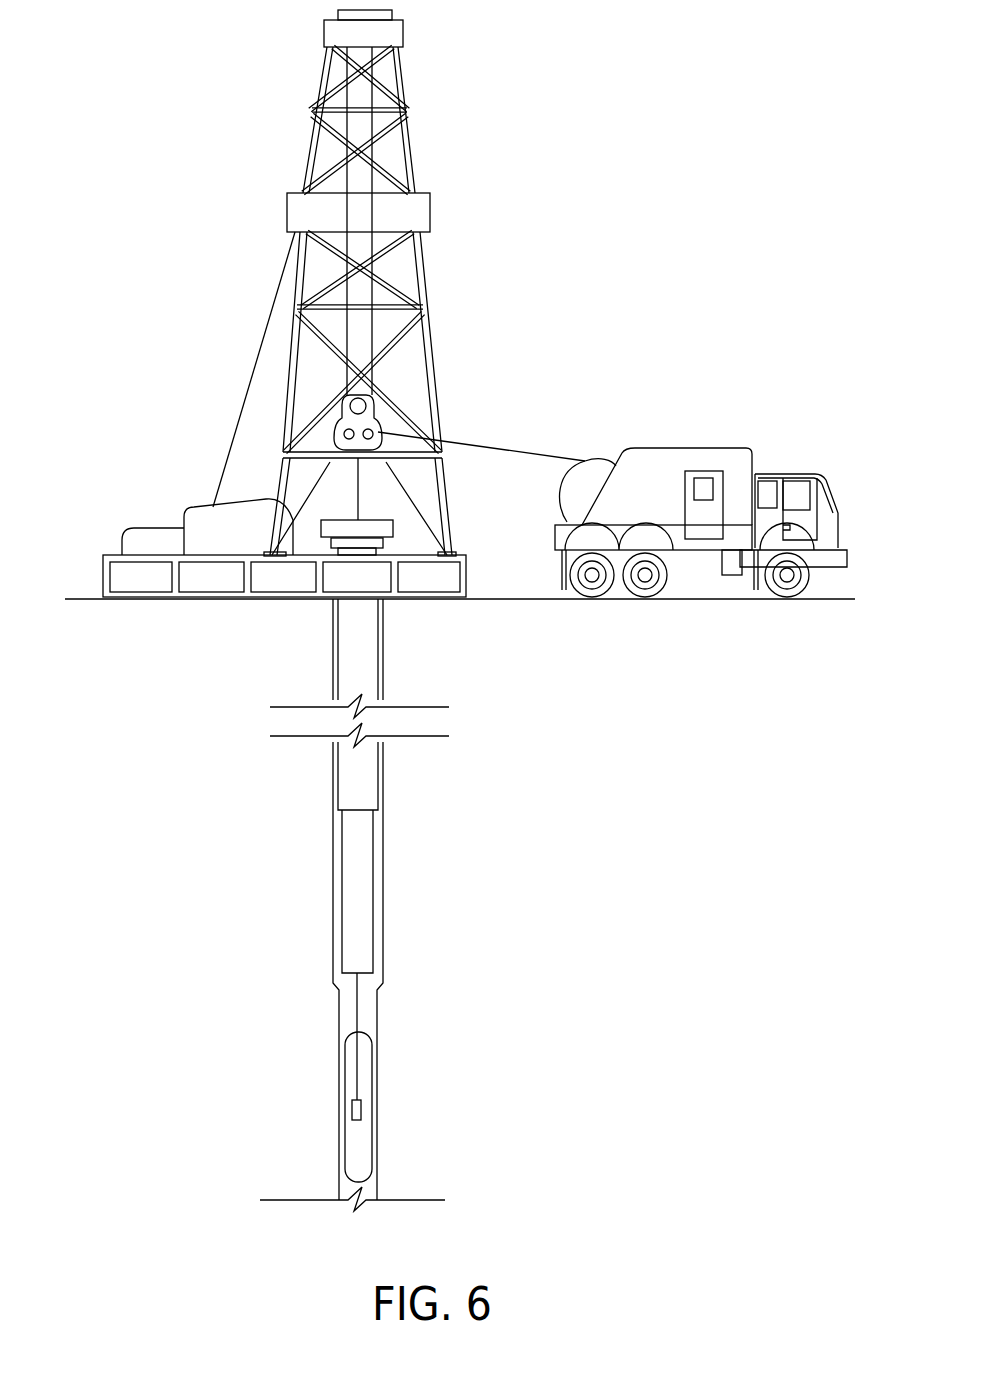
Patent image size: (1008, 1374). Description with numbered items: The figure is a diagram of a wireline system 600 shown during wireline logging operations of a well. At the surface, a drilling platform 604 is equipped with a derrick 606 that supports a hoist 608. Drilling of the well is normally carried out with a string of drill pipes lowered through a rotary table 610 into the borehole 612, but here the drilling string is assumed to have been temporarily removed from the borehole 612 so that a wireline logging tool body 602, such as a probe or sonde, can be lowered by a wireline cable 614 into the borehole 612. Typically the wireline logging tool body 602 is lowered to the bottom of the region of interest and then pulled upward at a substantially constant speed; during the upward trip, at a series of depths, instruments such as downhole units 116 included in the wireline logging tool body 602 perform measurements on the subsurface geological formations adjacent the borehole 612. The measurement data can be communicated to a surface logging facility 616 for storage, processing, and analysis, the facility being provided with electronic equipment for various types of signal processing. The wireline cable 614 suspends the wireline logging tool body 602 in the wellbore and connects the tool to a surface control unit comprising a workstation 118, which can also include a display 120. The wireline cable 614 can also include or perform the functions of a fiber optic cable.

The wireline system 600 is at (634, 219).
The wireline logging tool body 602 is at (365, 1035).
The drilling platform 604 is at (468, 578).
The derrick 606 is at (465, 553).
The hoist 608 is at (372, 403).
The rotary table 610 is at (395, 522).
The borehole 612 is at (338, 993).
The wireline cable 614 is at (487, 437).
The surface logging facility 616 is at (657, 450).
The downhole units 116 is at (361, 1105).
The workstation 118 is at (685, 520).
The display 120 is at (703, 478).